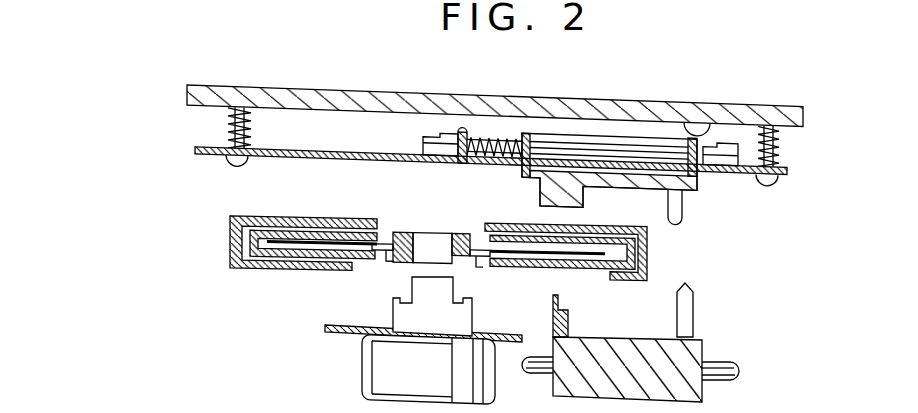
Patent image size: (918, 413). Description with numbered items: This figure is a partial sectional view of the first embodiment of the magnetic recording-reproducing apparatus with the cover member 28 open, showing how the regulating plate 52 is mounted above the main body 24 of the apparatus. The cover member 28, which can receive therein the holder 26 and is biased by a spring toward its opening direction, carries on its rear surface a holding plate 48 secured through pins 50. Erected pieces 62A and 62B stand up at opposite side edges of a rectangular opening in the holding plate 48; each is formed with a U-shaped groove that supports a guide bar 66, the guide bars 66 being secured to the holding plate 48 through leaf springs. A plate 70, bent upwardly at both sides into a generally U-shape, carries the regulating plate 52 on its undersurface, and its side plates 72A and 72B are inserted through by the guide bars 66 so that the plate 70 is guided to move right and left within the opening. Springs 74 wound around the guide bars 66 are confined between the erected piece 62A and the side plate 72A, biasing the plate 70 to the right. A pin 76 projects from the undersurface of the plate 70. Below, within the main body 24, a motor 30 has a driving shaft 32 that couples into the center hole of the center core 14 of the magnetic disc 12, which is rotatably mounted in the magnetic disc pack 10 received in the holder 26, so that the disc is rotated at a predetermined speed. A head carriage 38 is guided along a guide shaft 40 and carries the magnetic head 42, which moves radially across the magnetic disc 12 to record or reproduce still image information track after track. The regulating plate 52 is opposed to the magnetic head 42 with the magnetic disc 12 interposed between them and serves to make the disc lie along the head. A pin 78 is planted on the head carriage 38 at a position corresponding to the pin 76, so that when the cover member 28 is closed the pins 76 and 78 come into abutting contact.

The cover member 28 is at (652, 104).
The pins 50 is at (232, 130).
The holding plate 48 is at (742, 173).
The erected piece 62A is at (473, 128).
The erected piece 62B is at (705, 128).
The springs 74 is at (504, 132).
The side plate 72A is at (540, 132).
The side plate 72B is at (685, 125).
The guide bars 66 is at (590, 147).
The plate 70 is at (622, 183).
The regulating plate 52 is at (540, 194).
The pin 76 is at (678, 216).
The magnetic disc 12 is at (313, 221).
The magnetic disc pack 10 is at (268, 271).
The holder 26 is at (243, 272).
The center core 14 is at (412, 228).
The driving shaft 32 is at (423, 288).
The main body 24 is at (493, 331).
The motor 30 is at (377, 357).
The guide shaft 40 is at (722, 370).
The head carriage 38 is at (630, 358).
The magnetic head 42 is at (560, 306).
The pin 78 is at (692, 315).